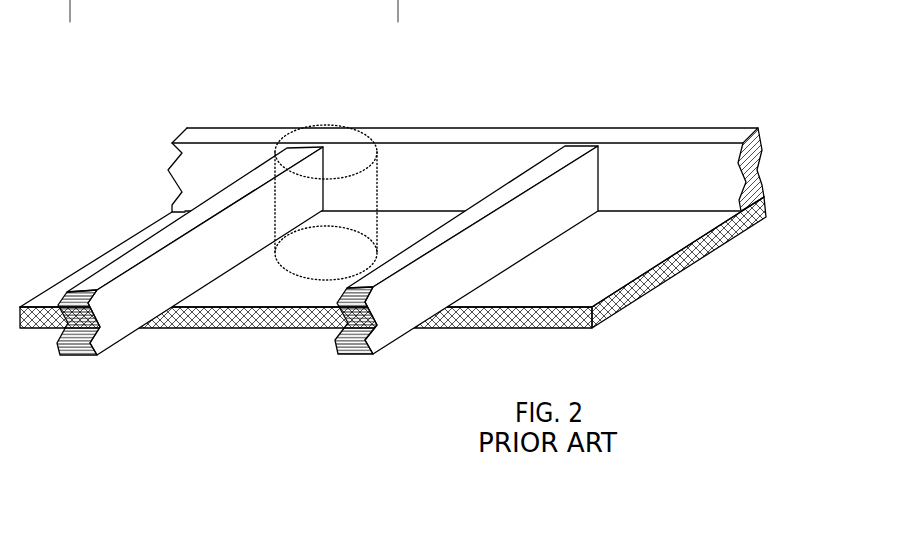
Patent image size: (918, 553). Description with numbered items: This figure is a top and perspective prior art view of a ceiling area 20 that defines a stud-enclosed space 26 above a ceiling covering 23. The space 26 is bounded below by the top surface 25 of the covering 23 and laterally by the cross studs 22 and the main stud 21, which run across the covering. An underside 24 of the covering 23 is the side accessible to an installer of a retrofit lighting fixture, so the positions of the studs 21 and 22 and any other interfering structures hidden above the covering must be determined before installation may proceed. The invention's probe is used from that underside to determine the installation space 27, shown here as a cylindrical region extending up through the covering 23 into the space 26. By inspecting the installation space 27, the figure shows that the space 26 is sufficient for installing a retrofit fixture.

The ceiling area 20 is at (408, 222).
The main stud 21 is at (408, 194).
The cross studs 22 is at (344, 228).
The ceiling covering 23 is at (690, 282).
The underside 24 is at (637, 300).
The top surface 25 is at (633, 233).
The stud-enclosed space 26 is at (322, 303).
The installation space 27 is at (377, 185).